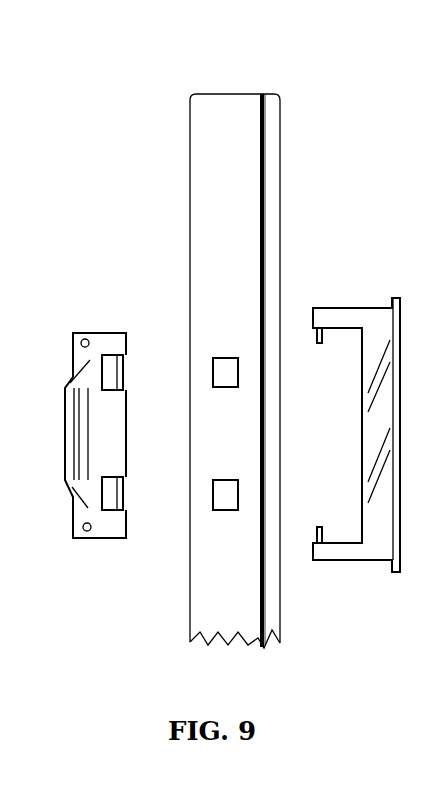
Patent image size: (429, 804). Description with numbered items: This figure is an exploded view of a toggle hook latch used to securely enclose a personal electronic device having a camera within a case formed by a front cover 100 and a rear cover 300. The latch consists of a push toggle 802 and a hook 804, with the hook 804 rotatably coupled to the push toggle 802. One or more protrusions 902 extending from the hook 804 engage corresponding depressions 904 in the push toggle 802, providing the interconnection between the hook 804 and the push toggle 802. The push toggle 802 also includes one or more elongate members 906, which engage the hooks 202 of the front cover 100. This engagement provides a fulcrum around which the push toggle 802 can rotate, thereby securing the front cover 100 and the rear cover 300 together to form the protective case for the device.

The front cover 100 is at (160, 102).
The rear cover 300 is at (292, 100).
The hooks 202 is at (212, 493).
The push toggle 802 is at (60, 427).
The hook 804 is at (345, 305).
The protrusions 902 is at (313, 348).
The depressions 904 is at (90, 330).
The elongate members 906 is at (128, 368).